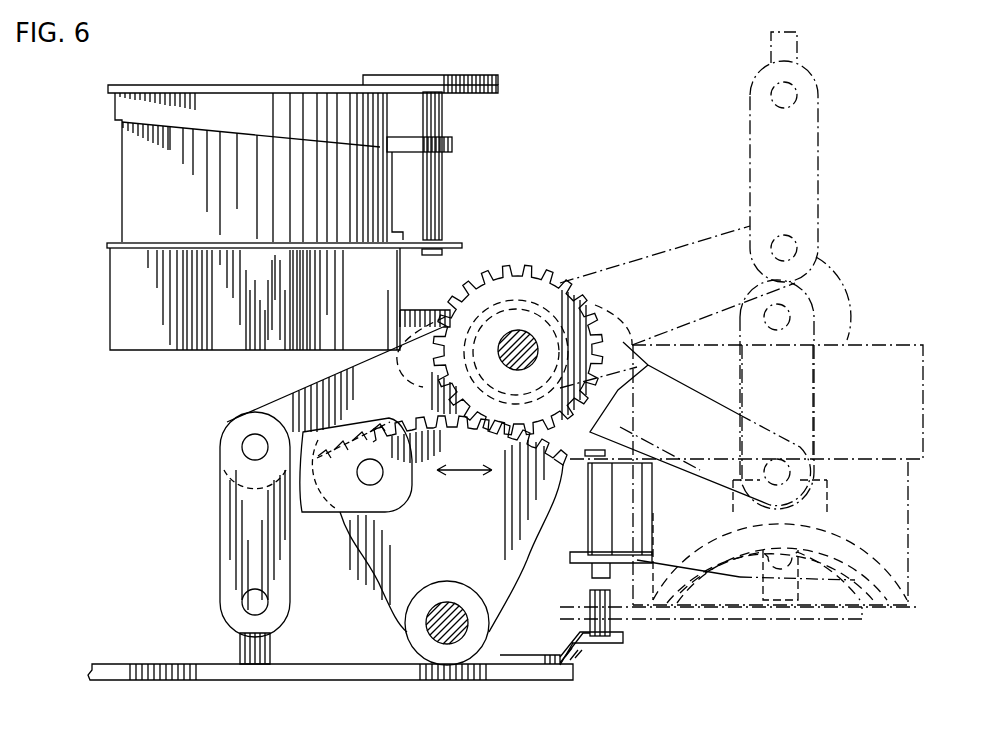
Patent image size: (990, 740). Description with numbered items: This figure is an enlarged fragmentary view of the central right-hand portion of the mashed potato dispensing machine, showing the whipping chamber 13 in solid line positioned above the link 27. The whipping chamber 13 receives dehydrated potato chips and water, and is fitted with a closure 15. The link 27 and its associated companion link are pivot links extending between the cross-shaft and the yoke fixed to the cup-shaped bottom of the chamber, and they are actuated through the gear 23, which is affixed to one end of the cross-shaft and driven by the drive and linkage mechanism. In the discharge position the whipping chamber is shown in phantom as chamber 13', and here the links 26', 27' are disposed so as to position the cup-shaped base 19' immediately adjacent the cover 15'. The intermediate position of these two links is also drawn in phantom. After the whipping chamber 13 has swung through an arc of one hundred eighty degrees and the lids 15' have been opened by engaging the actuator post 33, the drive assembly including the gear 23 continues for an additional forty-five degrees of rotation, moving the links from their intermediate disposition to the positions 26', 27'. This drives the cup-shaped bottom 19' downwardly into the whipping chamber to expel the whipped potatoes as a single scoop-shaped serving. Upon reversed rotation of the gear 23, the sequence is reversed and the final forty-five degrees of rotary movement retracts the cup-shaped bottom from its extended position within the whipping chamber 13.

The whipping chamber 13 is at (261, 221).
The closure 15 is at (303, 68).
The gear 23 is at (526, 276).
The link (discharge position) 27' is at (815, 383).
The link (discharge position) 26' is at (685, 430).
The whipping chamber (discharge position) 13' is at (767, 475).
The cup-shaped bottom (discharge position) 19' is at (806, 563).
The cover (discharge position) 15' is at (738, 624).
The actuator post 33 is at (617, 632).
The link 27 is at (234, 538).